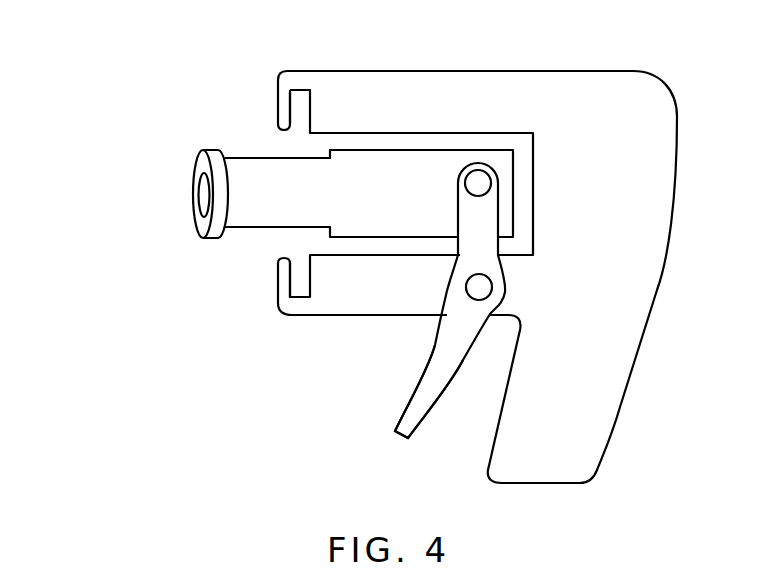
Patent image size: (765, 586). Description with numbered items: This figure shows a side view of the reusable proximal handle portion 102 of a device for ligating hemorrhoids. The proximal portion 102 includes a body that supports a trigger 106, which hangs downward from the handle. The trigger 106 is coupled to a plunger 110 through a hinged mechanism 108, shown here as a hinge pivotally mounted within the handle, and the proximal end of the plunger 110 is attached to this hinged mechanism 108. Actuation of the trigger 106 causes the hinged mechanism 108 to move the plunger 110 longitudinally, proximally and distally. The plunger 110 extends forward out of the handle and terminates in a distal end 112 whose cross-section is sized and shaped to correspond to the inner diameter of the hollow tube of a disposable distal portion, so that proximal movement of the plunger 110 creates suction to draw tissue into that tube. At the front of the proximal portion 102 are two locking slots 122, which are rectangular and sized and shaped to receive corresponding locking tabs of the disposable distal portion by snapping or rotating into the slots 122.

The proximal handle portion 102 is at (152, 100).
The trigger 106 is at (398, 432).
The hinged mechanism 108 is at (480, 180).
The plunger 110 is at (280, 213).
The distal end of the plunger 112 is at (203, 228).
The locking slots 122 is at (297, 113).